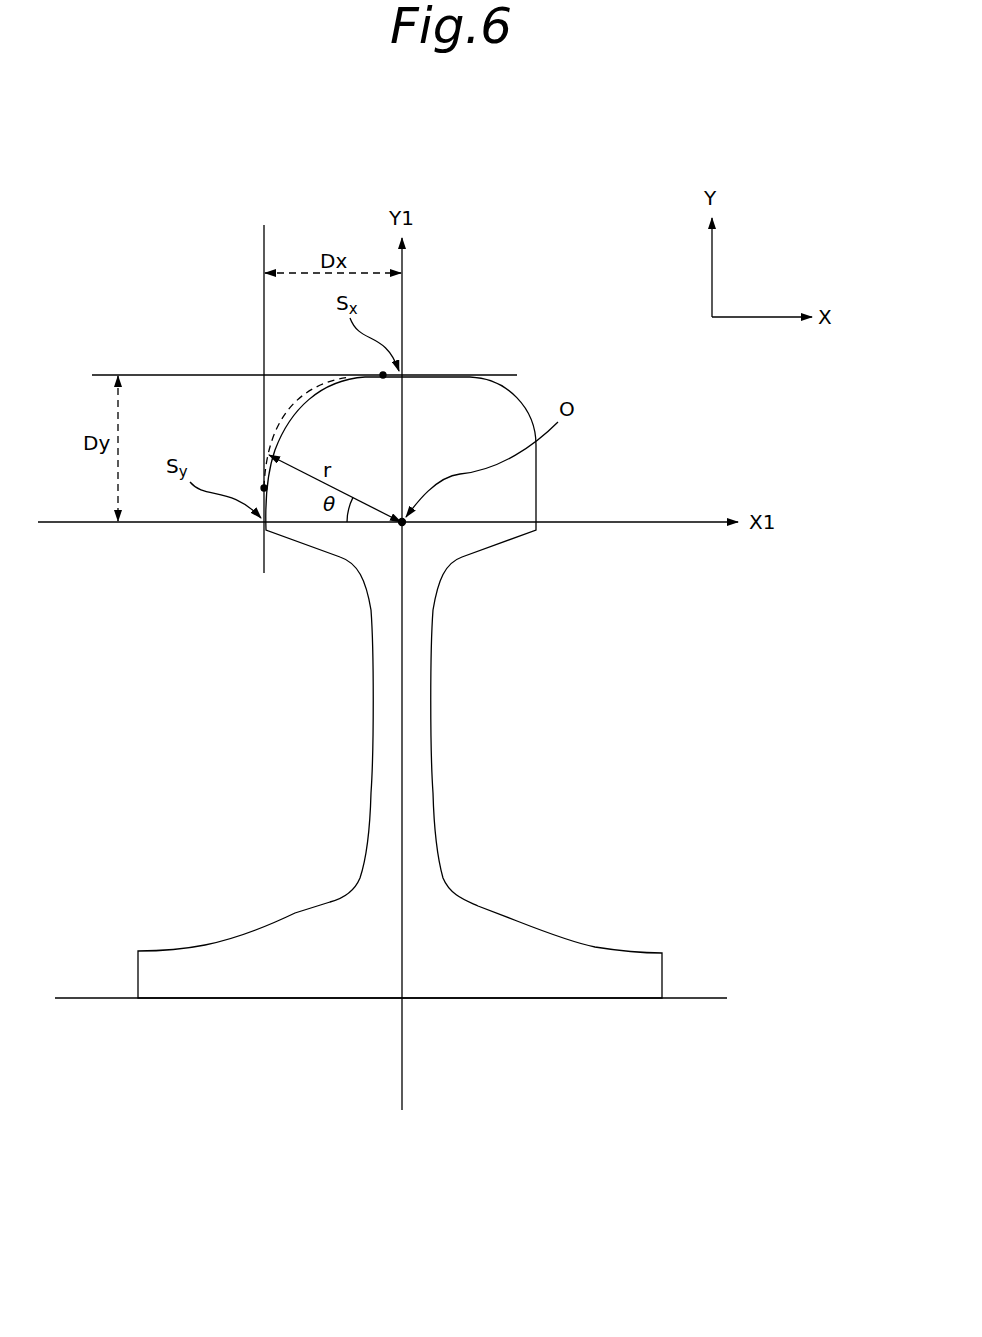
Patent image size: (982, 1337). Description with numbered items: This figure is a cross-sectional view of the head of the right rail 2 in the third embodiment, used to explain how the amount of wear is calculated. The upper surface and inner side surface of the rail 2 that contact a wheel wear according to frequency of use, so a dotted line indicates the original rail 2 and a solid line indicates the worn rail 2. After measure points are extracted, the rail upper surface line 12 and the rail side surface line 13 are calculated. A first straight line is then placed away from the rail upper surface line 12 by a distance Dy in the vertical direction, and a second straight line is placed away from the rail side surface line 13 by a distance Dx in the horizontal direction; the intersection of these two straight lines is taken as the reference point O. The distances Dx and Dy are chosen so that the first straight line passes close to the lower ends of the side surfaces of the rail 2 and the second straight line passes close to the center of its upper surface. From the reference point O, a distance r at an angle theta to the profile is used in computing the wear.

The rail 2 is at (470, 923).
The rail upper surface line 12 is at (108, 374).
The rail side surface line 13 is at (265, 242).